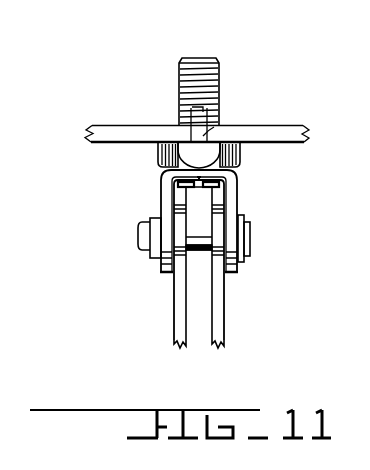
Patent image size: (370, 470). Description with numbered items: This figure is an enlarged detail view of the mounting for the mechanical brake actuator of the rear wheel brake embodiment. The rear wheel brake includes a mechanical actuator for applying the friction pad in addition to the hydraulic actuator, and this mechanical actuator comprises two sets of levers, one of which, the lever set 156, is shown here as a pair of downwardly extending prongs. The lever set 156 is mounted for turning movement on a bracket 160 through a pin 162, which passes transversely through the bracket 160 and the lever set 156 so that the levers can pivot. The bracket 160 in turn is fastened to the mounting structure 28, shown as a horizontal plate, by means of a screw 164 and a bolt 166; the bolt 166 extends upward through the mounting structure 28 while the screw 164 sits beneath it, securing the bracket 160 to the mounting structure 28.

The mounting structure 28 is at (280, 133).
The lever set 156 is at (217, 297).
The bracket 160 is at (235, 207).
The pin 162 is at (248, 242).
The screw 164 is at (221, 124).
The bolt 166 is at (201, 58).